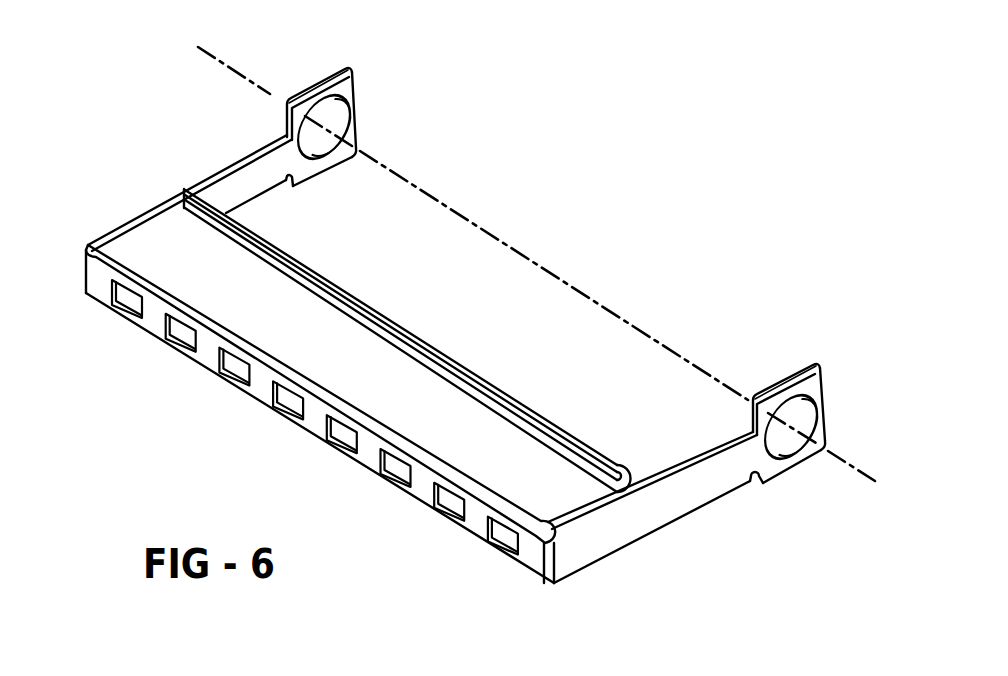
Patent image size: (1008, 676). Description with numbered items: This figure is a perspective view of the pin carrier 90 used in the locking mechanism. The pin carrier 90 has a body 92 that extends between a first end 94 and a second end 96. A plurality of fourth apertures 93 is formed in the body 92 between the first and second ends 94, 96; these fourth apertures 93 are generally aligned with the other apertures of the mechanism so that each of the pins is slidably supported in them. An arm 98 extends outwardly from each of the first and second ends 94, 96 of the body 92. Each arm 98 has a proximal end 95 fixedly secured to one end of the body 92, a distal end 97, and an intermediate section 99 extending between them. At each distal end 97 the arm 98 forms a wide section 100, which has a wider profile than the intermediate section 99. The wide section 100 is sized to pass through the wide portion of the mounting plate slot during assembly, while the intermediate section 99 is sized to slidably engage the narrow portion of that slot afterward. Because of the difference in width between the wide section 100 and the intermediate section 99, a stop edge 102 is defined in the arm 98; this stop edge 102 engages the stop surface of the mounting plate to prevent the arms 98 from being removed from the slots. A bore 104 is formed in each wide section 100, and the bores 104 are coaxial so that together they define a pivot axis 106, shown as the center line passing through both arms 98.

The pin carrier 90 is at (626, 222).
The body 92 is at (392, 386).
The fourth apertures 93 is at (222, 386).
The first end 94 is at (95, 285).
The proximal end 95 is at (92, 246).
The second end 96 is at (522, 570).
The distal end 97 is at (360, 128).
The arm 98 is at (270, 188).
The intermediate section 99 is at (225, 170).
The wide section 100 is at (307, 90).
The stop edge 102 is at (285, 128).
The bore 104 is at (352, 120).
The pivot axis 106 is at (866, 466).